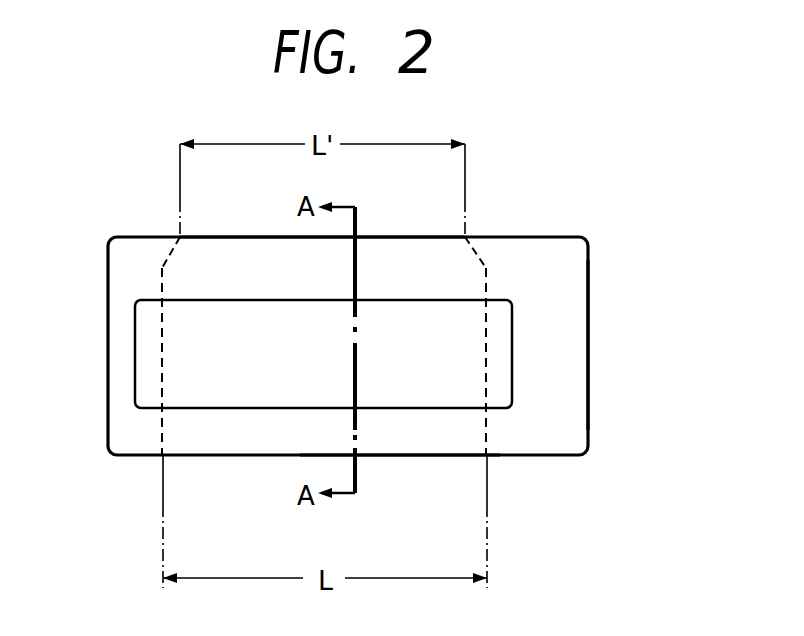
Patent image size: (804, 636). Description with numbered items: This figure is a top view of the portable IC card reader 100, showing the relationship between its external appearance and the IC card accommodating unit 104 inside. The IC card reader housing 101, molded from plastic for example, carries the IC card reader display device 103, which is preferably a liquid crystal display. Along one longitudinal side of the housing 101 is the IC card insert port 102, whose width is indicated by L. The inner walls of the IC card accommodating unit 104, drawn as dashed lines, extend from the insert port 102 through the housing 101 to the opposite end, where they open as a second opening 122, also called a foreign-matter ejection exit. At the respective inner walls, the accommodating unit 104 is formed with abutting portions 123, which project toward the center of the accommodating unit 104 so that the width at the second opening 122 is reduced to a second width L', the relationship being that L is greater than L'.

The portable IC card reader 100 is at (549, 465).
The IC card reader housing 101 is at (573, 403).
The IC card insert port 102 is at (427, 462).
The IC card reader display device 103 is at (253, 397).
The IC card accommodating unit 104 is at (163, 371).
The second opening 122 is at (322, 206).
The abutting portions 123 is at (160, 255).